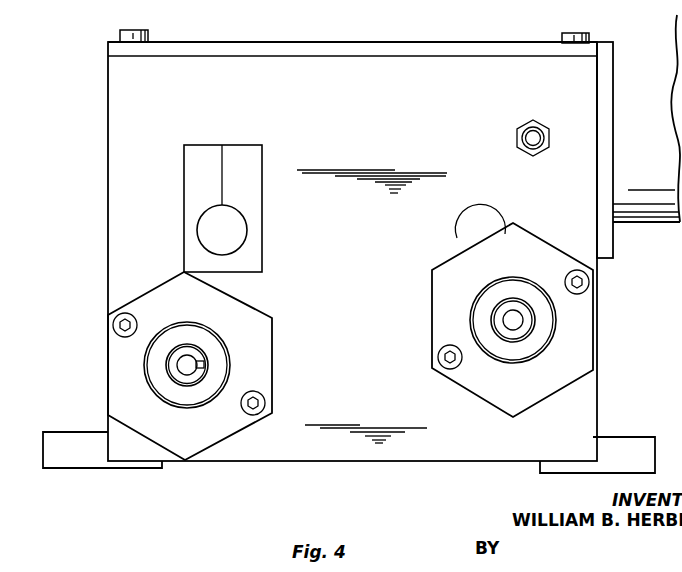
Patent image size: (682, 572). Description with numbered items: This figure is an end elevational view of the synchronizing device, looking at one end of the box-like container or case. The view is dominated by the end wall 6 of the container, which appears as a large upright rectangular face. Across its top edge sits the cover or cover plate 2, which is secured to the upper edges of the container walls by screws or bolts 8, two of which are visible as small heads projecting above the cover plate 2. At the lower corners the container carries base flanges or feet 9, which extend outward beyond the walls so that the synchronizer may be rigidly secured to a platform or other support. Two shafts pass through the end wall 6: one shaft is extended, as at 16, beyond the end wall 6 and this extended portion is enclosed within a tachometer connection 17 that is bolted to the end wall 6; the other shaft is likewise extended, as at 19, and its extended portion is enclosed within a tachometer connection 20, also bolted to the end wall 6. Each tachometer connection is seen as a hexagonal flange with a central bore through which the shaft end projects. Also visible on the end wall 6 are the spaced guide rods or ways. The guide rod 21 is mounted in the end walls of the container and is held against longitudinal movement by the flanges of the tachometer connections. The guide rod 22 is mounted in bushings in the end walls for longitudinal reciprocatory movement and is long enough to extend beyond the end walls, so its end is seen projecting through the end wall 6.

The cover plate 2 is at (342, 42).
The end wall 6 is at (280, 442).
The screws or bolts 8 is at (136, 30).
The base flanges or feet 9 is at (68, 432).
The extended portion of shaft 16 is at (513, 320).
The tachometer connection 17 is at (550, 346).
The extended portion of shaft 19 is at (191, 378).
The tachometer connection 20 is at (178, 408).
The guide rod 21 is at (488, 210).
The guide rod 22 is at (240, 238).